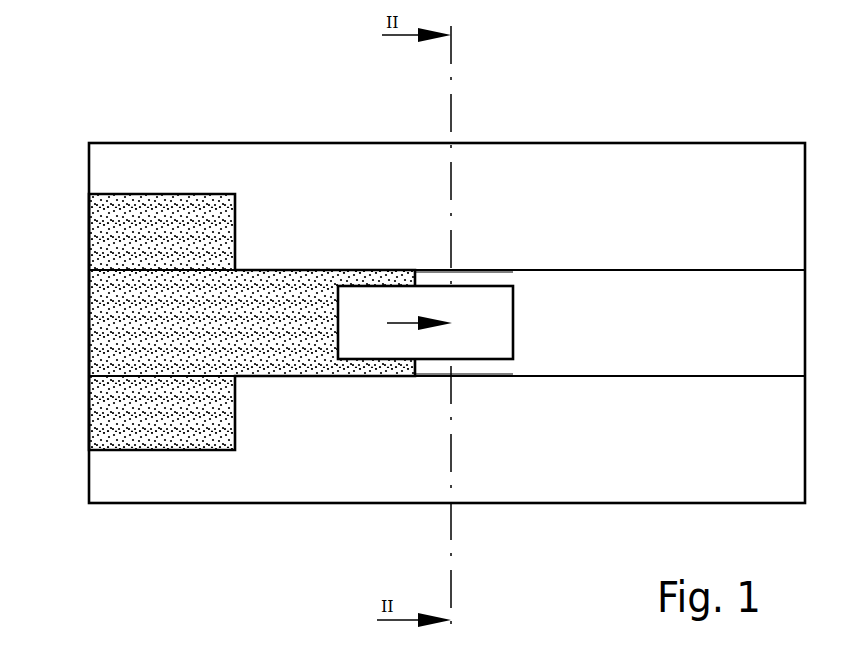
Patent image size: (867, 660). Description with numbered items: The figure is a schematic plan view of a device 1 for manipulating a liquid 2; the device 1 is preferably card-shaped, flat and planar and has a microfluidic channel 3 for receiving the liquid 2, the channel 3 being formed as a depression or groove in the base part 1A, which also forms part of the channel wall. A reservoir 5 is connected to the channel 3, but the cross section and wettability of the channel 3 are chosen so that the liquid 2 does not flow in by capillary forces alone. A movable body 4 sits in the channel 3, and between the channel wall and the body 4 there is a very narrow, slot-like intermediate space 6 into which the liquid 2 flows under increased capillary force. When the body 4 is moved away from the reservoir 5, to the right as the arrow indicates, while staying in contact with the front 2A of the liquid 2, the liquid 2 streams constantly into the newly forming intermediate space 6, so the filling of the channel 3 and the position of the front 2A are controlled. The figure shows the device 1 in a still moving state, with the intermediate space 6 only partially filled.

The device 1 is at (101, 90).
The base part 1A is at (306, 467).
The liquid 2 is at (293, 305).
The front 2A is at (415, 363).
The channel 3 is at (583, 270).
The body 4 is at (398, 303).
The reservoir 5 is at (190, 200).
The intermediate space 6 is at (478, 280).